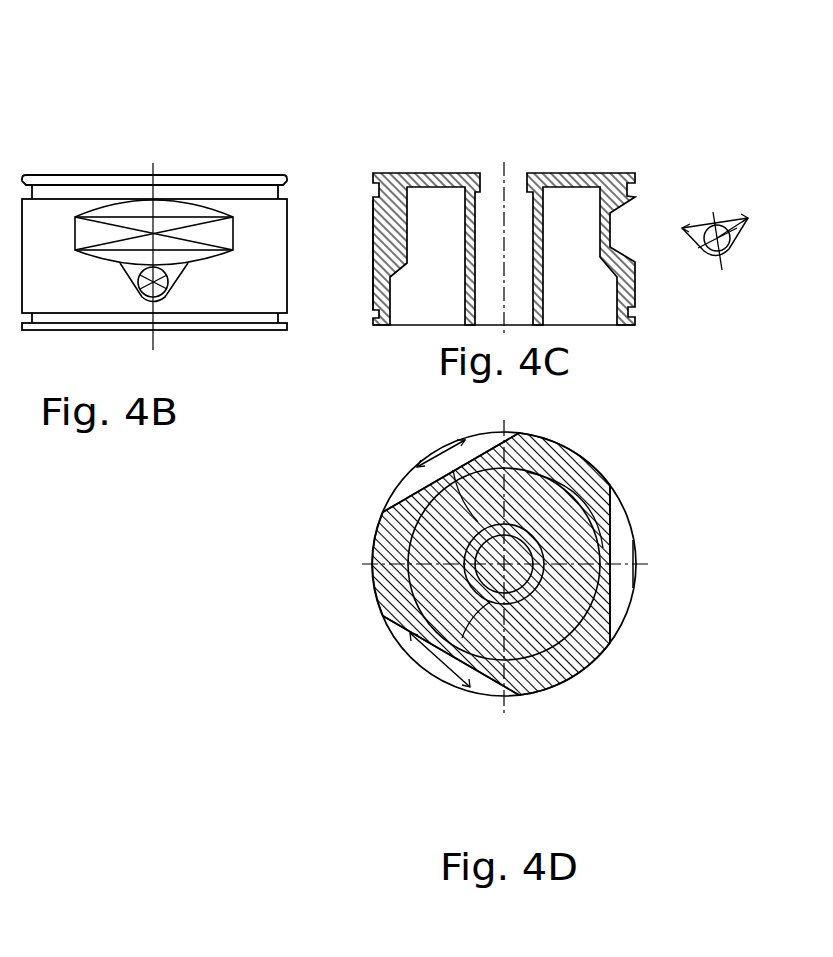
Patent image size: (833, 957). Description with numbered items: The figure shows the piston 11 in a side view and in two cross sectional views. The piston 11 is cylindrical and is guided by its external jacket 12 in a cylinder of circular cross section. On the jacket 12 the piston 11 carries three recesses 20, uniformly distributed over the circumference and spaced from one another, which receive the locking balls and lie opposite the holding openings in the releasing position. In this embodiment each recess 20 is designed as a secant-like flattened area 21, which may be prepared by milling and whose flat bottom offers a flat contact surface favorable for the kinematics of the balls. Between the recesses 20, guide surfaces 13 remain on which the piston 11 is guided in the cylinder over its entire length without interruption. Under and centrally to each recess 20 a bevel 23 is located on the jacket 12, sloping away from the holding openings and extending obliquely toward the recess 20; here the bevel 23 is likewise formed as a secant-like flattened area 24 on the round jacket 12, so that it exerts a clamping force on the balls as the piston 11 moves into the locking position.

In FIG. 4C, the piston 11 is at (567, 178).
In FIG. 4D, the piston 11 is at (530, 698).
In FIG. 4B, the jacket 12 is at (187, 196).
In FIG. 4C, the jacket 12 is at (373, 257).
In FIG. 4D, the jacket 12 is at (458, 564).
In FIG. 4D, the guide surfaces 13 is at (565, 452).
In FIG. 4B, the recesses 20 is at (145, 210).
In FIG. 4C, the recesses 20 is at (633, 232).
In FIG. 4D, the recesses 20 is at (447, 465).
In FIG. 4B, the flattened areas 21 is at (203, 232).
In FIG. 4D, the flattened areas 21 is at (496, 564).
In FIG. 4B, the bevel 23 is at (200, 341).
In FIG. 4D, the bevel 23 is at (635, 568).
In FIG. 4B, the flattened area 24 is at (154, 282).
In FIG. 4D, the flattened area 24 is at (504, 564).